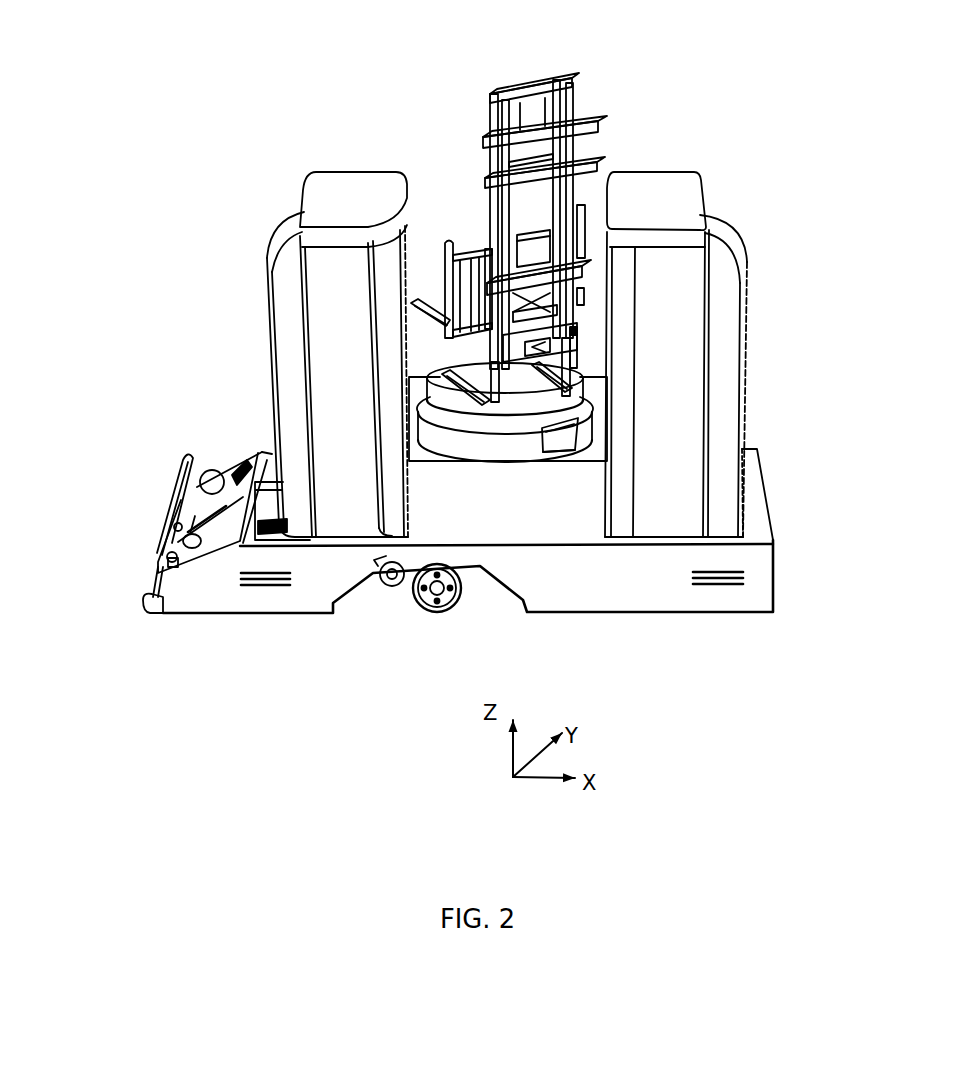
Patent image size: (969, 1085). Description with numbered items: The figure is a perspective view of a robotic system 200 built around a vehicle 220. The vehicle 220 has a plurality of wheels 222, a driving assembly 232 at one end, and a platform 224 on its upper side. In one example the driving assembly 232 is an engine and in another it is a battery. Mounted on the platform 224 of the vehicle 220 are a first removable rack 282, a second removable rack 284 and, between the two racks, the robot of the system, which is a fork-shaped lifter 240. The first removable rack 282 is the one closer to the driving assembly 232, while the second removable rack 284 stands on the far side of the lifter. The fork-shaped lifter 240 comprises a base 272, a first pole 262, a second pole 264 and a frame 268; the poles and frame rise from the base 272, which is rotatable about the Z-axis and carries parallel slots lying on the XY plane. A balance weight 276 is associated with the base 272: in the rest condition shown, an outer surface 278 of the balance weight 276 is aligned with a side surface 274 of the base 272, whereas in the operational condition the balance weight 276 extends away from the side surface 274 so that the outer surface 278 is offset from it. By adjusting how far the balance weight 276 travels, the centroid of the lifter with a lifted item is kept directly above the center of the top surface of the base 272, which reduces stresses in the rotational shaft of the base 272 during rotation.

The robotic system 200 is at (148, 99).
The vehicle 220 is at (148, 622).
The wheels 222 is at (425, 620).
The platform 224 is at (735, 520).
The driving assembly 232 is at (212, 508).
The fork-shaped lifter 240 is at (515, 72).
The first pole 262 is at (478, 365).
The second pole 264 is at (574, 366).
The frame 268 is at (470, 236).
The base 272 is at (471, 440).
The side surface 274 is at (497, 440).
The balance weight 276 is at (549, 438).
The outer surface 278 is at (562, 432).
The first removable rack 282 is at (360, 160).
The second removable rack 284 is at (658, 162).